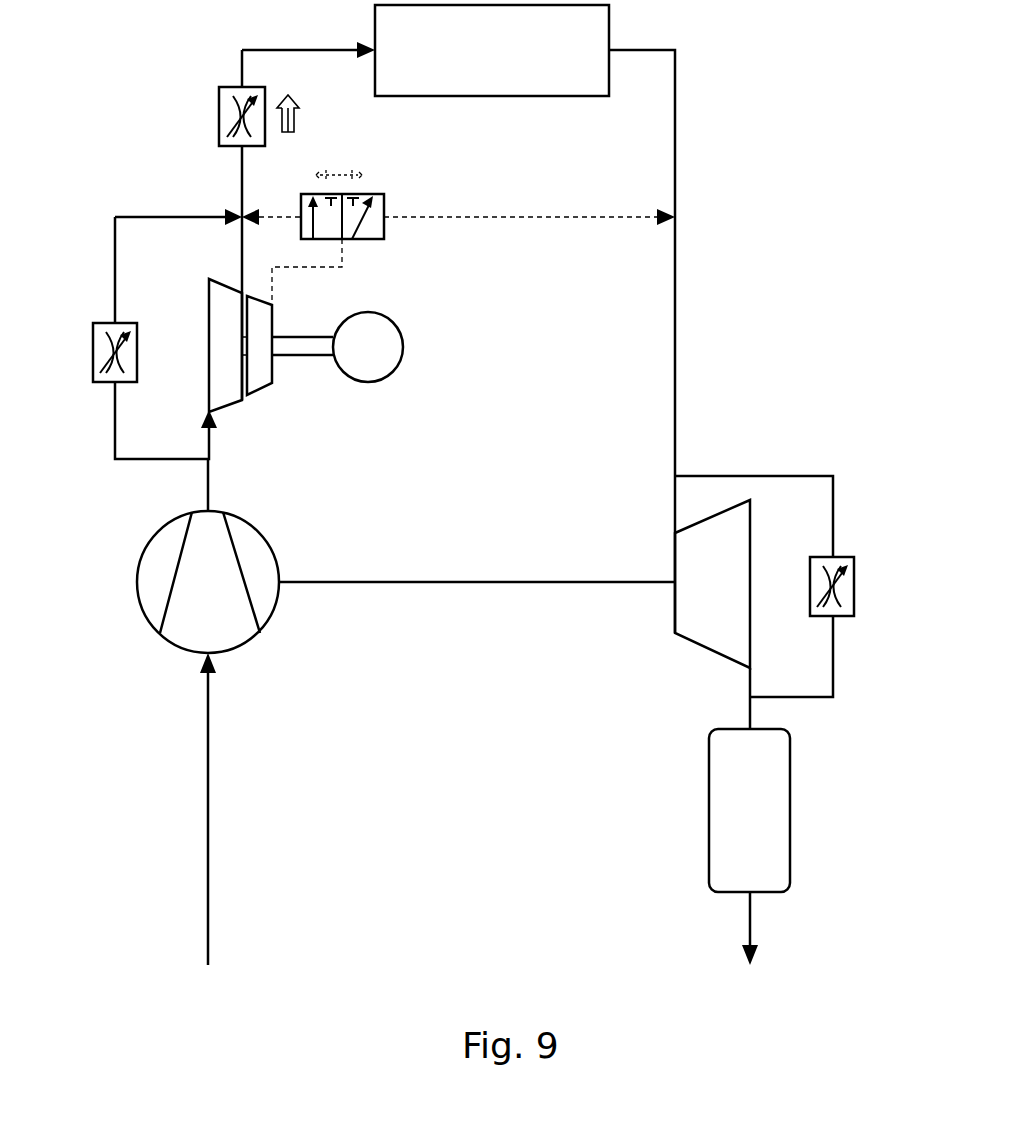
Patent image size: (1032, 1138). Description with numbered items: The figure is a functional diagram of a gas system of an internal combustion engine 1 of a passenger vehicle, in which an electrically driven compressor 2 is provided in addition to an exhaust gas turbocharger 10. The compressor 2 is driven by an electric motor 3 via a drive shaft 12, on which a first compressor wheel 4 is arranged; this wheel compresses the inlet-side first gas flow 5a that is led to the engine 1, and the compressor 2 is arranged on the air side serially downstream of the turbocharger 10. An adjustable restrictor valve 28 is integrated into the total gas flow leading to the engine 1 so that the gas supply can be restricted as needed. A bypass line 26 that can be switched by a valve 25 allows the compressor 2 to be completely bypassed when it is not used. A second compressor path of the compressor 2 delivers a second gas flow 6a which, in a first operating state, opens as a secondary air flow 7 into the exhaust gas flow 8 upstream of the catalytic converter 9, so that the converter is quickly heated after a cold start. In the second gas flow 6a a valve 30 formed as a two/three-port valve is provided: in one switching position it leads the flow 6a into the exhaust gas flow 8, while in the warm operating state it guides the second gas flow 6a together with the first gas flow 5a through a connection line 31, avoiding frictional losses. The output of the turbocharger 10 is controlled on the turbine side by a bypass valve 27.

The internal combustion engine 1 is at (496, 63).
The compressor 2 is at (240, 399).
The electric motor 3 is at (377, 361).
The first compressor wheel 4 is at (213, 322).
The first gas flow 5a is at (240, 248).
The second gas flow 6a is at (514, 217).
The secondary air flow 7 is at (544, 230).
The exhaust gas flow 8 is at (676, 142).
The catalytic converter 9 is at (759, 829).
The exhaust gas turbocharger 10 is at (687, 568).
The drive shaft 12 is at (305, 347).
The valve 25 is at (90, 350).
The bypass line 26 is at (112, 420).
The bypass valve 27 is at (857, 585).
The adjustable restrictor valve 28 is at (219, 114).
The valve 30 is at (384, 207).
The connection line 31 is at (268, 215).